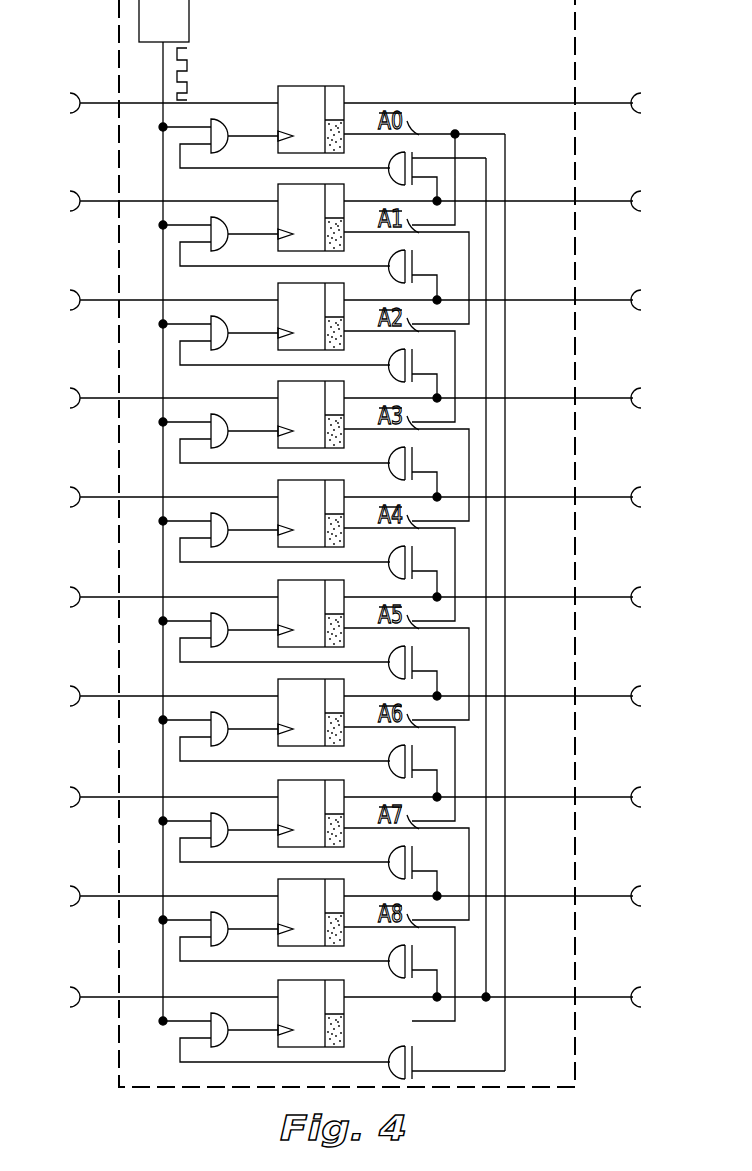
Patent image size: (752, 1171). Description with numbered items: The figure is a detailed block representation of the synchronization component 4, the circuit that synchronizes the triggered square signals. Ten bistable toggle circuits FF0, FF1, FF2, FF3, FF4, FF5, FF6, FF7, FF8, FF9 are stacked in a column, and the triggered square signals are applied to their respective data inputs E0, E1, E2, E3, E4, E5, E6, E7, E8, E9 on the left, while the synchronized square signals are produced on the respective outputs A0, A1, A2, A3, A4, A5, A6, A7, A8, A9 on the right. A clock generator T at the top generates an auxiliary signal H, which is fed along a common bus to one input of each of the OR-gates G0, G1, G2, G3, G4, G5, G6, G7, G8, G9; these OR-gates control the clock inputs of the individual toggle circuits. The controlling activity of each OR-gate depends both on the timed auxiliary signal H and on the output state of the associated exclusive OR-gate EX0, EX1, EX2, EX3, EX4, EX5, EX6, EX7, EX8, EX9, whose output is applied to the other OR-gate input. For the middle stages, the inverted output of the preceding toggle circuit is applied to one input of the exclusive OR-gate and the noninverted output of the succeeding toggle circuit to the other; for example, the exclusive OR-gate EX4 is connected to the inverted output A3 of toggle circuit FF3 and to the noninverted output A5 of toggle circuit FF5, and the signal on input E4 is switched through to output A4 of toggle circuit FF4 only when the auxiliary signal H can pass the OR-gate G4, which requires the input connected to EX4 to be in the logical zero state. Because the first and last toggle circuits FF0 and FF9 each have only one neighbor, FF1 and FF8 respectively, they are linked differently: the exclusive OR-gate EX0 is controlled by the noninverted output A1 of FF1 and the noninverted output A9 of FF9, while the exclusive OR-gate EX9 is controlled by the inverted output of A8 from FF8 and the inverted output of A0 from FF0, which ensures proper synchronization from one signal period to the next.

The synchronization component 4 is at (563, 1033).
The clock generator T is at (183, 22).
The auxiliary signal H is at (187, 78).
The OR-gate G0 is at (235, 127).
The OR-gate G1 is at (235, 225).
The OR-gate G2 is at (235, 324).
The OR-gate G3 is at (235, 422).
The OR-gate G4 is at (235, 521).
The OR-gate G5 is at (235, 621).
The OR-gate G6 is at (235, 720).
The OR-gate G7 is at (235, 821).
The OR-gate G8 is at (235, 920).
The OR-gate G9 is at (235, 1021).
The bistable toggle circuit FF0 is at (311, 119).
The bistable toggle circuit FF1 is at (311, 217).
The bistable toggle circuit FF2 is at (311, 316).
The bistable toggle circuit FF3 is at (311, 414).
The bistable toggle circuit FF4 is at (311, 513).
The bistable toggle circuit FF5 is at (311, 613).
The bistable toggle circuit FF6 is at (311, 712).
The bistable toggle circuit FF7 is at (311, 813).
The bistable toggle circuit FF8 is at (311, 912).
The bistable toggle circuit FF9 is at (311, 1013).
The exclusive OR-gate EX0 is at (379, 163).
The exclusive OR-gate EX1 is at (379, 261).
The exclusive OR-gate EX2 is at (379, 360).
The exclusive OR-gate EX3 is at (379, 458).
The exclusive OR-gate EX4 is at (379, 557).
The exclusive OR-gate EX5 is at (379, 657).
The exclusive OR-gate EX6 is at (379, 756).
The exclusive OR-gate EX7 is at (379, 857).
The exclusive OR-gate EX8 is at (379, 956).
The exclusive OR-gate EX9 is at (379, 1057).
The data input E0 is at (164, 89).
The data input E1 is at (164, 187).
The data input E2 is at (164, 286).
The data input E3 is at (164, 384).
The data input E4 is at (164, 483).
The data input E5 is at (164, 583).
The data input E6 is at (164, 682).
The data input E7 is at (164, 783).
The data input E8 is at (164, 882).
The data input E9 is at (164, 983).
The output A0 is at (509, 104).
The output A1 is at (509, 202).
The output A2 is at (509, 301).
The output A3 is at (509, 399).
The output A4 is at (509, 498).
The output A5 is at (509, 598).
The output A6 is at (509, 697).
The output A7 is at (509, 798).
The output A8 is at (509, 897).
The output A9 is at (509, 998).